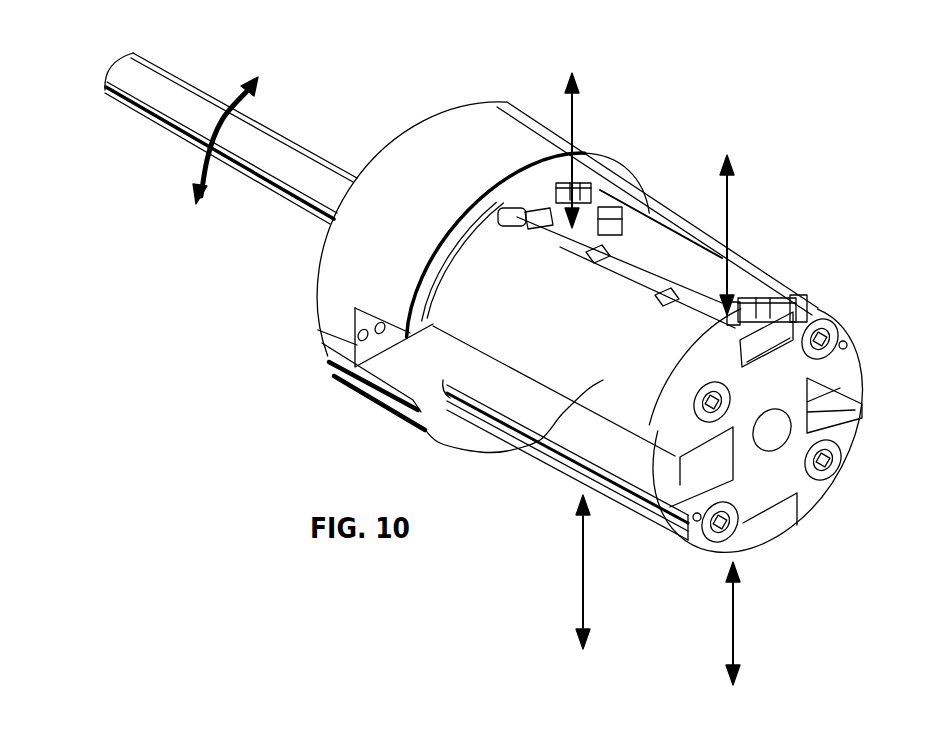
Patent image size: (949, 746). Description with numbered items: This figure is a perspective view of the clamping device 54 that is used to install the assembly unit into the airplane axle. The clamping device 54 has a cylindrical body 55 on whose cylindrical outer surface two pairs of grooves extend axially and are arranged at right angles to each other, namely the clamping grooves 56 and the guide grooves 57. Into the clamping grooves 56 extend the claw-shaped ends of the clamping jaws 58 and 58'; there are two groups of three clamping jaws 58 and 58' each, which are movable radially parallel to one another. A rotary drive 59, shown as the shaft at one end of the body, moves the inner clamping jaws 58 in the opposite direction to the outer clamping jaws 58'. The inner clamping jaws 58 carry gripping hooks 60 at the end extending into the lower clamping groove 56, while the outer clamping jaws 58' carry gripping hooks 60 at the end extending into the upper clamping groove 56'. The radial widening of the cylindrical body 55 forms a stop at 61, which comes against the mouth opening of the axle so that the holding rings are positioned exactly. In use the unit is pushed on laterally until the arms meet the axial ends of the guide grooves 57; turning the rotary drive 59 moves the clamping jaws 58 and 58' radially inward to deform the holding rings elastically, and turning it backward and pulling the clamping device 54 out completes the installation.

The clamping device 54 is at (514, 532).
The cylindrical body 55 is at (548, 443).
The clamping groove 56 is at (755, 456).
The upper clamping groove 56' is at (626, 253).
The guide groove 57 is at (590, 438).
The inner clamping jaw 58 is at (680, 215).
The outer clamping jaw 58' is at (586, 265).
The rotary drive 59 is at (180, 112).
The gripping hook 60 is at (553, 187).
The stop 61 is at (497, 193).